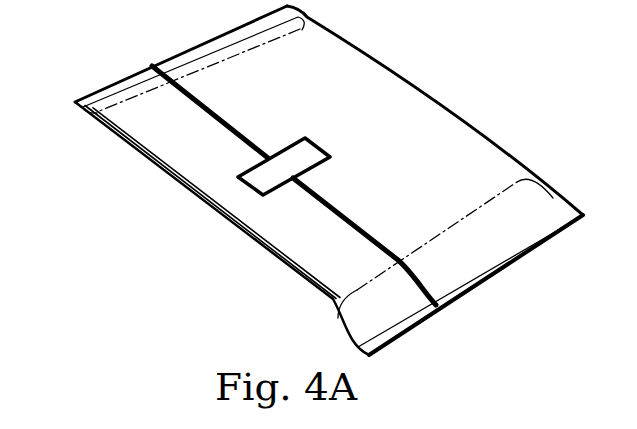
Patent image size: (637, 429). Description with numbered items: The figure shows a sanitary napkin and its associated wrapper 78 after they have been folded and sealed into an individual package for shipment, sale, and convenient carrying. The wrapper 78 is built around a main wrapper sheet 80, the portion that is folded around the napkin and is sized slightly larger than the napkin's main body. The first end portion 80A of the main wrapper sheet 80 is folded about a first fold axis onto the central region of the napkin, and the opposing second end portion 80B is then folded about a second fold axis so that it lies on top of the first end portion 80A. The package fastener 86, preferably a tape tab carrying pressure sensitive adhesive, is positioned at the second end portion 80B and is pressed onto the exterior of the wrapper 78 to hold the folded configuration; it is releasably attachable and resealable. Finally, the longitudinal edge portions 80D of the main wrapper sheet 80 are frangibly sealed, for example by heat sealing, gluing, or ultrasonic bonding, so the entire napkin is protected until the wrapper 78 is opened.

The wrapper 78 is at (319, 180).
The main wrapper sheet 80 is at (319, 180).
The first end portion 80A is at (167, 100).
The second end portion 80B is at (235, 72).
The longitudinal edge portions 80D is at (476, 285).
The package fastener 86 is at (250, 170).